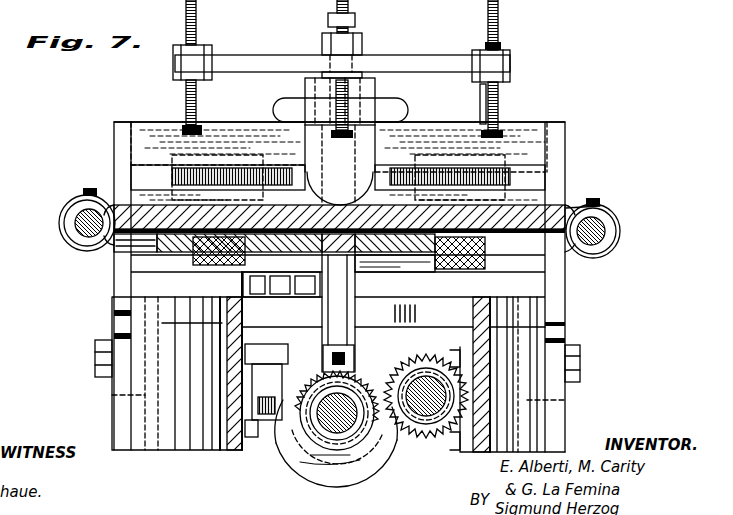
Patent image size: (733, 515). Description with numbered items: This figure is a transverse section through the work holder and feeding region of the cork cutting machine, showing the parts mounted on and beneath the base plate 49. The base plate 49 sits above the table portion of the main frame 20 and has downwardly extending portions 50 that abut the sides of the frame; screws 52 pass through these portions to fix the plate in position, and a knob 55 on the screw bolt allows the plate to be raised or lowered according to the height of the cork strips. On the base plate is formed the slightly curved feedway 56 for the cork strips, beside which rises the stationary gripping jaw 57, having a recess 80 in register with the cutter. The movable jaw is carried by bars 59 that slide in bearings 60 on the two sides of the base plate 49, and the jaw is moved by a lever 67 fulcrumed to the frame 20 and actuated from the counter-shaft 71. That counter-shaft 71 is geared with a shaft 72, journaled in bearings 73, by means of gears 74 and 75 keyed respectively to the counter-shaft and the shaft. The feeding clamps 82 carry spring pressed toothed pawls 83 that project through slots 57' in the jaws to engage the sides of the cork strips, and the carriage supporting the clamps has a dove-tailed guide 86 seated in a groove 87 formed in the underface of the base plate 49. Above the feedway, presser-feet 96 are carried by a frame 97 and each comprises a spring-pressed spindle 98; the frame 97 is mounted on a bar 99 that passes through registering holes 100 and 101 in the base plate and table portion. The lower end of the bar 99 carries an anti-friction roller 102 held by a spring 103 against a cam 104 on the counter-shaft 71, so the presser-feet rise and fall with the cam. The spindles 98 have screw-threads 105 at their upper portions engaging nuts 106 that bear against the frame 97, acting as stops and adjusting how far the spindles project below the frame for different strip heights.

The main frame 20 is at (473, 312).
The base plate 49 is at (598, 208).
The downwardly extending portions 50 is at (562, 308).
The screws 52 is at (581, 357).
The knob 55 is at (404, 110).
The feedway 56 is at (568, 200).
The stationary gripping jaw 57 is at (341, 126).
The slots 57' is at (345, 148).
The bars 59 is at (605, 236).
The bearings 60 is at (603, 218).
The lever 67 is at (288, 410).
The counter-shaft 71 is at (340, 427).
The shaft 72 is at (425, 410).
The bearings 73 is at (432, 418).
The gear 74 is at (366, 378).
The gear 75 is at (420, 358).
The recess 80 is at (376, 152).
The feeding clamps 82 is at (172, 169).
The spring pressed toothed pawls 83 is at (498, 168).
The dove-tailed guide 86 is at (290, 252).
The groove 87 is at (120, 250).
The presser-feet 96 is at (500, 103).
The frame 97 is at (416, 58).
The spring-pressed spindle 98 is at (486, 103).
The bar 99 is at (357, 280).
The hole 100 is at (282, 275).
The hole 101 is at (430, 272).
The anti-friction roller 102 is at (365, 332).
The spring 103 is at (395, 277).
The cam 104 is at (303, 462).
The screw-threads 105 is at (499, 16).
The nuts 106 is at (500, 46).